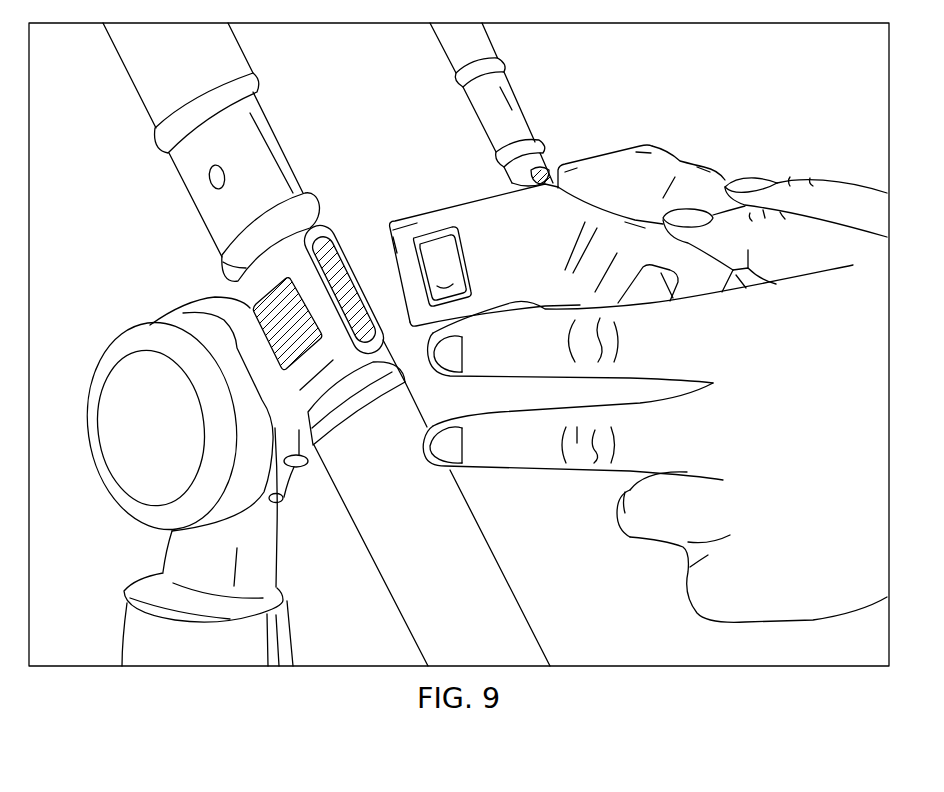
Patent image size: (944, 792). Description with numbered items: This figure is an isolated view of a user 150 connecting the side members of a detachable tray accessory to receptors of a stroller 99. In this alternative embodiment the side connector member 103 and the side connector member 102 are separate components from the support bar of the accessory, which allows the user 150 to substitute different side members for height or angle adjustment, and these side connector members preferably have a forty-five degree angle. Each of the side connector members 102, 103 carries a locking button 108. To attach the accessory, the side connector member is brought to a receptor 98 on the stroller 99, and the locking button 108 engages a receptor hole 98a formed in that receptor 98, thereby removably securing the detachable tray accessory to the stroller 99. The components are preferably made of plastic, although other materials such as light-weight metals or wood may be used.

The handle tube 99 is at (126, 113).
The handle junction sleeve 98 is at (265, 278).
The grip pad 98a is at (265, 307).
The mobile device 102 is at (662, 150).
The device cradle 103 is at (482, 207).
The retaining button 108 is at (427, 240).
The hand 150 is at (810, 158).